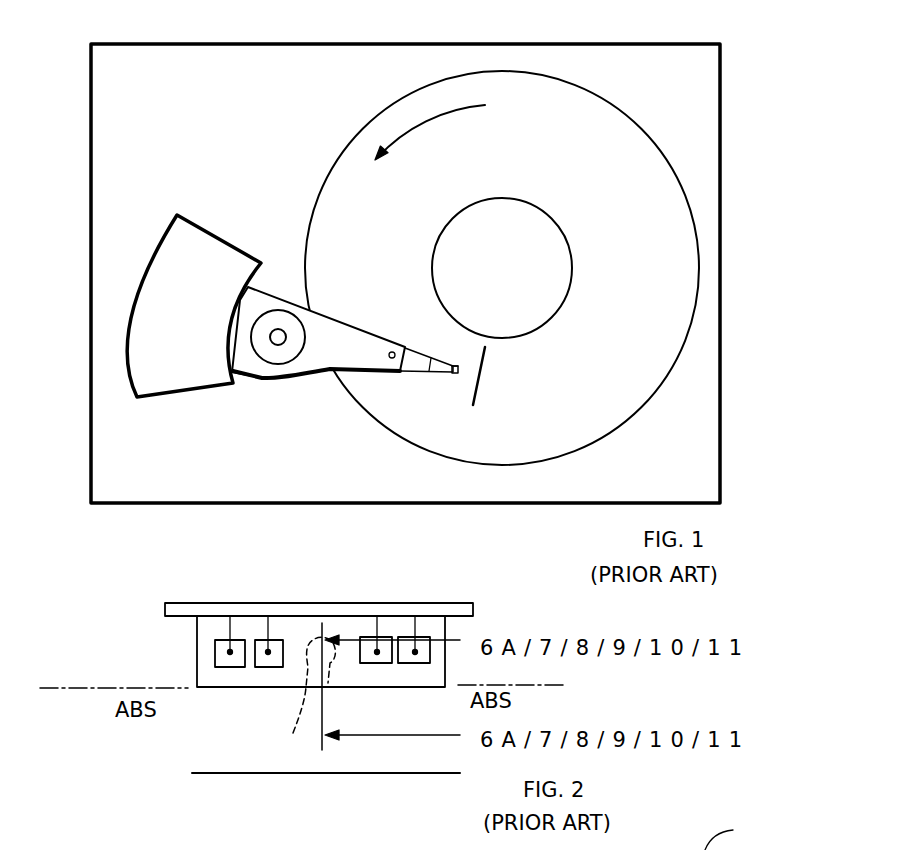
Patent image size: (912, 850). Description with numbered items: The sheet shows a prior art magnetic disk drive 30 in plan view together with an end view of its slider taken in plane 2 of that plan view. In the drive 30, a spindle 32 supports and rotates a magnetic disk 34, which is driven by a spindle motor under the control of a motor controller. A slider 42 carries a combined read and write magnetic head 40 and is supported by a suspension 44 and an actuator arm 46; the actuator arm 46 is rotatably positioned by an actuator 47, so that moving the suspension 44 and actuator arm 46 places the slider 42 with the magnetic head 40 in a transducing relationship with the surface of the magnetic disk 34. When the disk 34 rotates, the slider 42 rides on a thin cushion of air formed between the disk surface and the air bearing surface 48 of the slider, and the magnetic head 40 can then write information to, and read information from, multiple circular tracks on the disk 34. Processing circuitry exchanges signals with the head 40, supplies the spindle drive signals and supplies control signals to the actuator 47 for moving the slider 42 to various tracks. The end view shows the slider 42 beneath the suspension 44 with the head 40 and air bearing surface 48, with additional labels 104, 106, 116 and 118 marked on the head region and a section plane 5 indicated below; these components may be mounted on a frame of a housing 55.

In FIG. 1, the magnetic disk drive 30 is at (736, 48).
In FIG. 1, the spindle 32 is at (528, 202).
In FIG. 1, the magnetic disk 34 is at (628, 267).
In FIG. 1, the magnetic head 40 is at (457, 374).
In FIG. 2, the magnetic head 40 is at (296, 691).
In FIG. 1, the slider 42 is at (456, 365).
In FIG. 2, the slider 42 is at (197, 649).
In FIG. 1, the suspension 44 is at (408, 373).
In FIG. 2, the suspension 44 is at (319, 609).
In FIG. 1, the actuator arm 46 is at (326, 311).
In FIG. 1, the actuator 47 is at (212, 233).
In FIG. 2, the air bearing surface 48 is at (83, 688).
In FIG. 1, the plane 2— 2 is at (506, 360).
In FIG. 2, the section line 5- 5 is at (218, 787).
In FIG. 2, the housing 55 is at (735, 834).
In FIG. 2, the first pad 104 is at (215, 640).
In FIG. 2, the second pad 106 is at (399, 637).
In FIG. 2, the first lead 116 is at (255, 640).
In FIG. 2, the second lead 118 is at (361, 637).